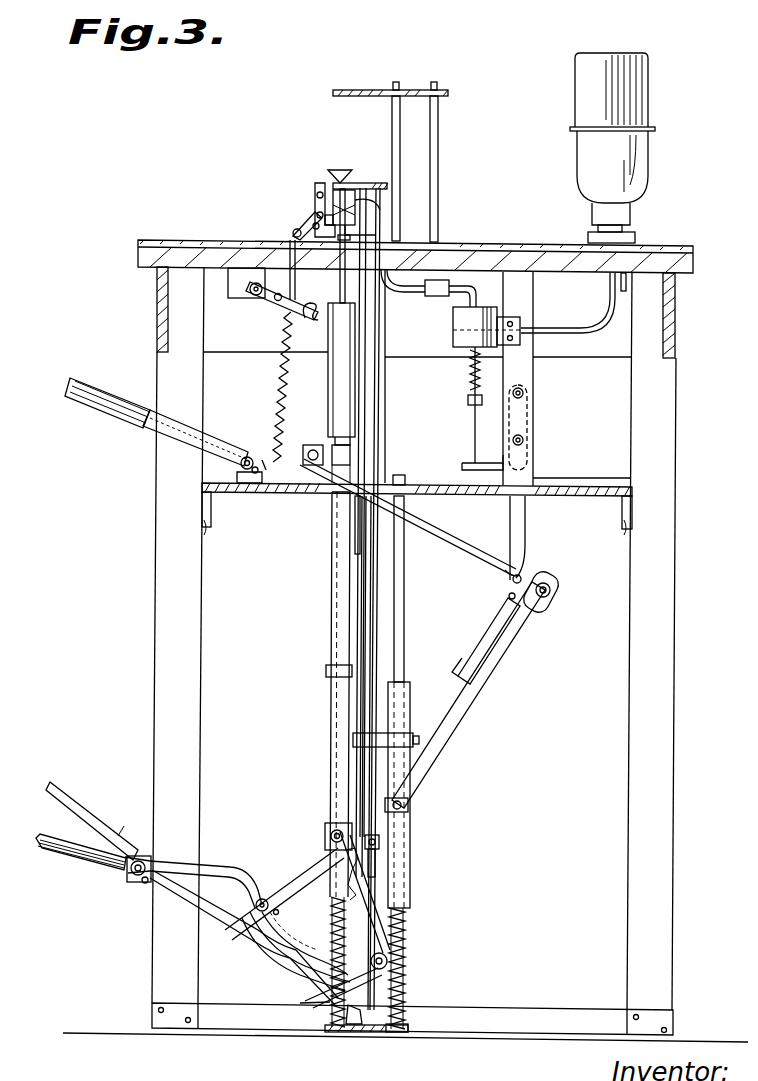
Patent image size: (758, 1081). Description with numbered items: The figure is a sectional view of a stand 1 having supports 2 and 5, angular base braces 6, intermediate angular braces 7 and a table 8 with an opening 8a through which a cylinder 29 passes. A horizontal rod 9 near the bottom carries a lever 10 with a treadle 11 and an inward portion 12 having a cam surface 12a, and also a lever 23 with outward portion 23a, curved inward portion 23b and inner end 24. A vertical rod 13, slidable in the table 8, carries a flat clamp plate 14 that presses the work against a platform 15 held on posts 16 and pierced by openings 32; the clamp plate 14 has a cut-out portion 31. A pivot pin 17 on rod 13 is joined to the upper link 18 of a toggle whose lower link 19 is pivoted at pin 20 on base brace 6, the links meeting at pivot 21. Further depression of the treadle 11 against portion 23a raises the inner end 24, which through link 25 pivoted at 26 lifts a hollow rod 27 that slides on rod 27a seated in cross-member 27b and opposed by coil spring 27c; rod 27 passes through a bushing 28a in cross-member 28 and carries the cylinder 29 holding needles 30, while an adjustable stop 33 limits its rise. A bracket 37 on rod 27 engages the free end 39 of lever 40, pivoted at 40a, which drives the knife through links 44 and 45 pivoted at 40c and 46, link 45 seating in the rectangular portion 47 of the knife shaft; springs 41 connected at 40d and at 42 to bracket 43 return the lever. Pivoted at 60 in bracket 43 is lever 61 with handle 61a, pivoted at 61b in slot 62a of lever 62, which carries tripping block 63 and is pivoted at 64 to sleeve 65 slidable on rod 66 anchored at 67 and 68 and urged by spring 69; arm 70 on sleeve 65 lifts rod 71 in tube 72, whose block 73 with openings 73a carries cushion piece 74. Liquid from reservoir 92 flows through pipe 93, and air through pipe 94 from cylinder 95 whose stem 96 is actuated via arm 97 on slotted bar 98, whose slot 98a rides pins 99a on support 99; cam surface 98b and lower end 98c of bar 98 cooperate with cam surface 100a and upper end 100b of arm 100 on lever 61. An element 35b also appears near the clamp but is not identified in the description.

The stand 1 is at (690, 392).
The support 2 is at (162, 660).
The support 5 is at (668, 656).
The angular base brace 6 is at (292, 1040).
The intermediate angular brace 7 is at (200, 525).
The table 8 is at (150, 255).
The opening 8a is at (345, 258).
The rod 9 is at (130, 885).
The lever 10 is at (180, 890).
The treadle portion 11 is at (85, 806).
The inwardly extending portion 12 is at (246, 932).
The cam surface 12a is at (318, 948).
The vertically extending rod 13 is at (365, 766).
The flat plate 14 is at (378, 183).
The horizontal platform 15 is at (361, 90).
The posts 16 is at (392, 118).
The pivot pin 17 is at (380, 842).
The upper link 18 is at (302, 878).
The lower link 19 is at (310, 991).
The pin 20 is at (320, 1004).
The pivot 21 is at (272, 908).
The lever 23 is at (206, 874).
The outwardly extending portion 23a is at (96, 864).
The inwardly extending portion 23b is at (272, 960).
The inner end 24 is at (395, 960).
The link 25 is at (396, 920).
The pivot 26 is at (326, 832).
The hollow rod 27 is at (333, 700).
The vertical rod 27a is at (292, 1008).
The cross-member 27b is at (360, 1020).
The coil spring 27c is at (350, 1030).
The cross-member 28 is at (202, 487).
The bushing 28a is at (340, 500).
The cylinder 29 is at (336, 392).
The needles 30 is at (342, 296).
The cut-out portion 31 is at (361, 183).
The openings 32 is at (345, 90).
The stop 33 is at (330, 670).
The cam 35b is at (340, 178).
The bracket 37 is at (352, 456).
The free end 39 is at (311, 318).
The lever 40 is at (270, 292).
The pivot 40a is at (258, 302).
The pivot 40c is at (279, 302).
The spring connection 40d is at (290, 363).
The springs 41 is at (284, 387).
The spring connection 42 is at (311, 459).
The bracket 43 is at (250, 458).
The link 44 is at (294, 231).
The link 45 is at (318, 212).
The pivot 46 is at (310, 228).
The rectangular portion 47 is at (322, 222).
The pivot 60 is at (252, 478).
The lever 61 is at (178, 432).
The handle 61a is at (112, 408).
The pivot 61b is at (545, 612).
The lever 62 is at (470, 714).
The slot 62a is at (552, 585).
The tripping block 63 is at (355, 890).
The pivot 64 is at (410, 805).
The sleeve 65 is at (408, 706).
The rod 66 is at (402, 646).
The anchor 67 is at (400, 480).
The anchor 68 is at (402, 1028).
The coil spring 69 is at (402, 938).
The arm 70 is at (352, 740).
The rod 71 is at (360, 702).
The tube 72 is at (358, 545).
The block 73 is at (358, 213).
The openings 73a is at (356, 226).
The cushion piece 74 is at (366, 200).
The reservoir 92 is at (648, 95).
The pipe 93 is at (582, 322).
The pipe 94 is at (412, 290).
The cylinder 95 is at (455, 336).
The spring-pressed stem 96 is at (470, 412).
The arm 97 is at (468, 464).
The slotted bar 98 is at (512, 506).
The slot 98a is at (527, 418).
The cam surface 98b is at (524, 545).
The lower end 98c is at (505, 566).
The support 99 is at (527, 305).
The pins 99a is at (523, 392).
The arm 100 is at (472, 658).
The cam surface 100a is at (480, 640).
The upper end 100b is at (522, 575).